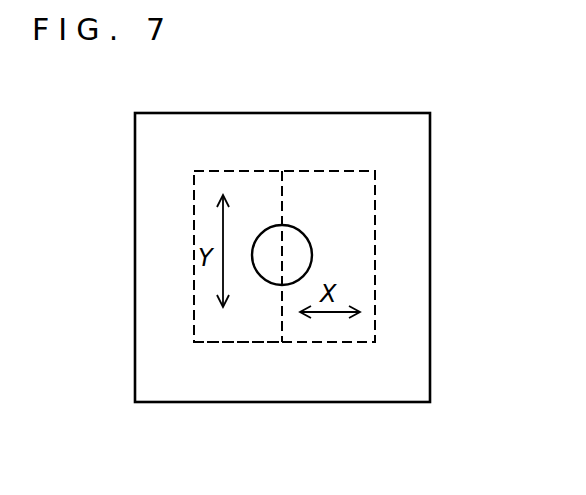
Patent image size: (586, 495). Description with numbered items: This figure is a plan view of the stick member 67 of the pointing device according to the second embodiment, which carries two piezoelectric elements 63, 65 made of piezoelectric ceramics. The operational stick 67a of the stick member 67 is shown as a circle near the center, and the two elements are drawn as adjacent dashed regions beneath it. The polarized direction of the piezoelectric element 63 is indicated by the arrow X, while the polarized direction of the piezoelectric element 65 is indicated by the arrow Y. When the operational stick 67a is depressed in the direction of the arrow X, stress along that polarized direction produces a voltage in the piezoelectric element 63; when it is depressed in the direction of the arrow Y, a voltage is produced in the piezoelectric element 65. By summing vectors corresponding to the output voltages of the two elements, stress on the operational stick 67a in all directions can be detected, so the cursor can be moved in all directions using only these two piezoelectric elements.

The stick member 67 is at (446, 148).
The operational stick 67a is at (304, 253).
The piezoelectric element 63 is at (312, 342).
The piezoelectric element 65 is at (235, 342).